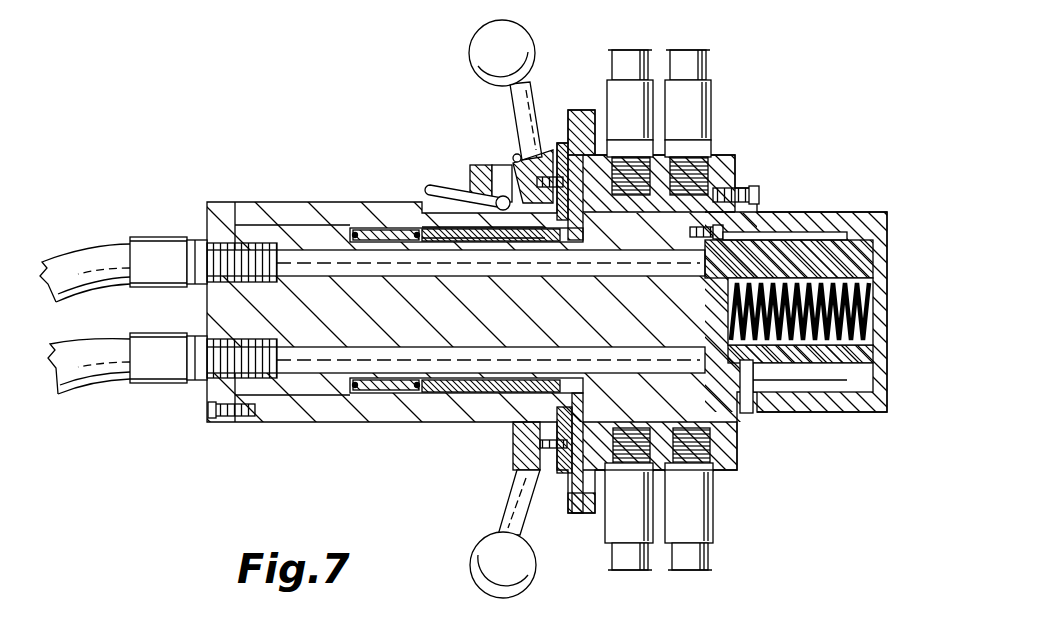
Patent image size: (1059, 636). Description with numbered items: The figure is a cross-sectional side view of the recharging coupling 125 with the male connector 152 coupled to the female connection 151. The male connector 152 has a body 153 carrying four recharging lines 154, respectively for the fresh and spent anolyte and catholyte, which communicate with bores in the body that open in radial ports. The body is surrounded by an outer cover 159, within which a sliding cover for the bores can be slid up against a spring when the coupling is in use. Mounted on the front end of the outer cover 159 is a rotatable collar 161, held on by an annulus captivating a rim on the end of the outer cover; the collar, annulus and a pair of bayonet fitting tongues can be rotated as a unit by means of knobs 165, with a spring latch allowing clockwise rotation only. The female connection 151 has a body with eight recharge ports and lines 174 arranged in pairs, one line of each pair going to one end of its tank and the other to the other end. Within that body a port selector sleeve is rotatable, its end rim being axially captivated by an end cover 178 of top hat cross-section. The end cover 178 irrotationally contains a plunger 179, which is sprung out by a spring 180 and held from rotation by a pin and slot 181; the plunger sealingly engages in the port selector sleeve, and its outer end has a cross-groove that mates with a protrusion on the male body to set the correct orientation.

The recharging coupling 125 is at (665, 46).
The female connection 151 is at (755, 164).
The male connector 152 is at (463, 312).
The body 153 is at (352, 312).
The recharging lines 154 is at (157, 357).
The outer cover 159 is at (290, 212).
The collar 161 is at (513, 437).
The knobs 165 is at (490, 48).
The lines 174 is at (632, 560).
The end cover 178 is at (796, 353).
The plunger 179 is at (800, 262).
The spring 180 is at (830, 342).
The pin and slot 181 is at (775, 370).